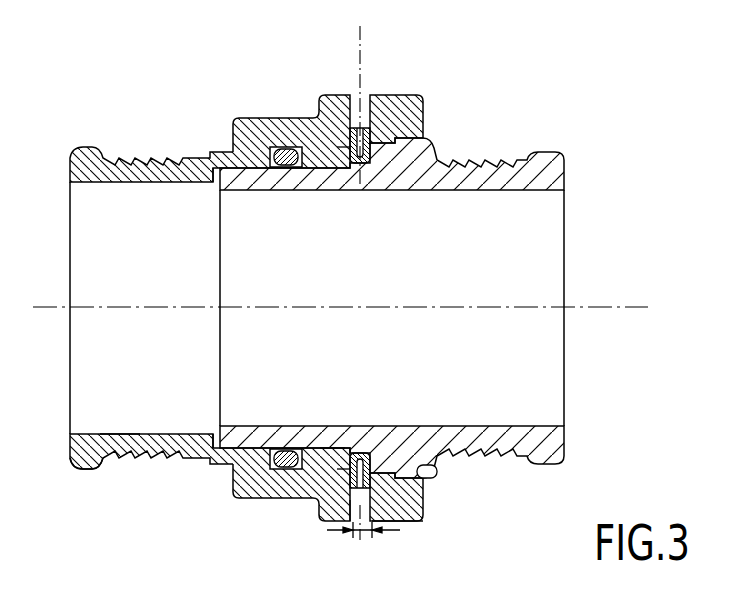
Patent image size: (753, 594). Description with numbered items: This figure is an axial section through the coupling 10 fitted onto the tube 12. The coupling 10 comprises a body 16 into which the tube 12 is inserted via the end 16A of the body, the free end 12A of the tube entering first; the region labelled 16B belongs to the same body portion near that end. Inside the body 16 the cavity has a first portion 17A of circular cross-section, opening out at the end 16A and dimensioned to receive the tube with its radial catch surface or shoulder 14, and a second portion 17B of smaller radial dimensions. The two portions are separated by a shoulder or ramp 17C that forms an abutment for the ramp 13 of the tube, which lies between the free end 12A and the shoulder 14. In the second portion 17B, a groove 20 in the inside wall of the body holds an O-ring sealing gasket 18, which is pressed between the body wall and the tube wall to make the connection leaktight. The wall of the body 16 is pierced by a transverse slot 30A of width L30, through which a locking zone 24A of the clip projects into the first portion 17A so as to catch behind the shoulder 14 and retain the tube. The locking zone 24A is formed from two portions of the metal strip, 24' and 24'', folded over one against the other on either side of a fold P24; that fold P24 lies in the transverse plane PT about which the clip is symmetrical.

The coupling 10 is at (124, 138).
The tube 12 is at (479, 149).
The free end of the tube 12A is at (228, 178).
The ramp of the tube 13 is at (311, 452).
The catch surface (shoulder) of the tube 14 is at (363, 452).
The body of the coupling 16 is at (256, 128).
The end of the body 16A is at (416, 96).
The pipe end bead 16B is at (90, 460).
The first portion of the cavity 17A is at (437, 468).
The second portion of the cavity 17B is at (118, 433).
The shoulder or ramp of the body 17C is at (331, 455).
The O-ring sealing gasket 18 is at (288, 146).
The groove 20 is at (283, 168).
The locking zone 24A is at (399, 455).
The strip portion of the locking zone 24'' is at (275, 510).
The strip portion of the locking zone 24' is at (397, 549).
The fold P24 is at (362, 186).
The transverse plane PT is at (358, 55).
The width of the slot L30 is at (330, 531).
The slot 30A is at (360, 530).